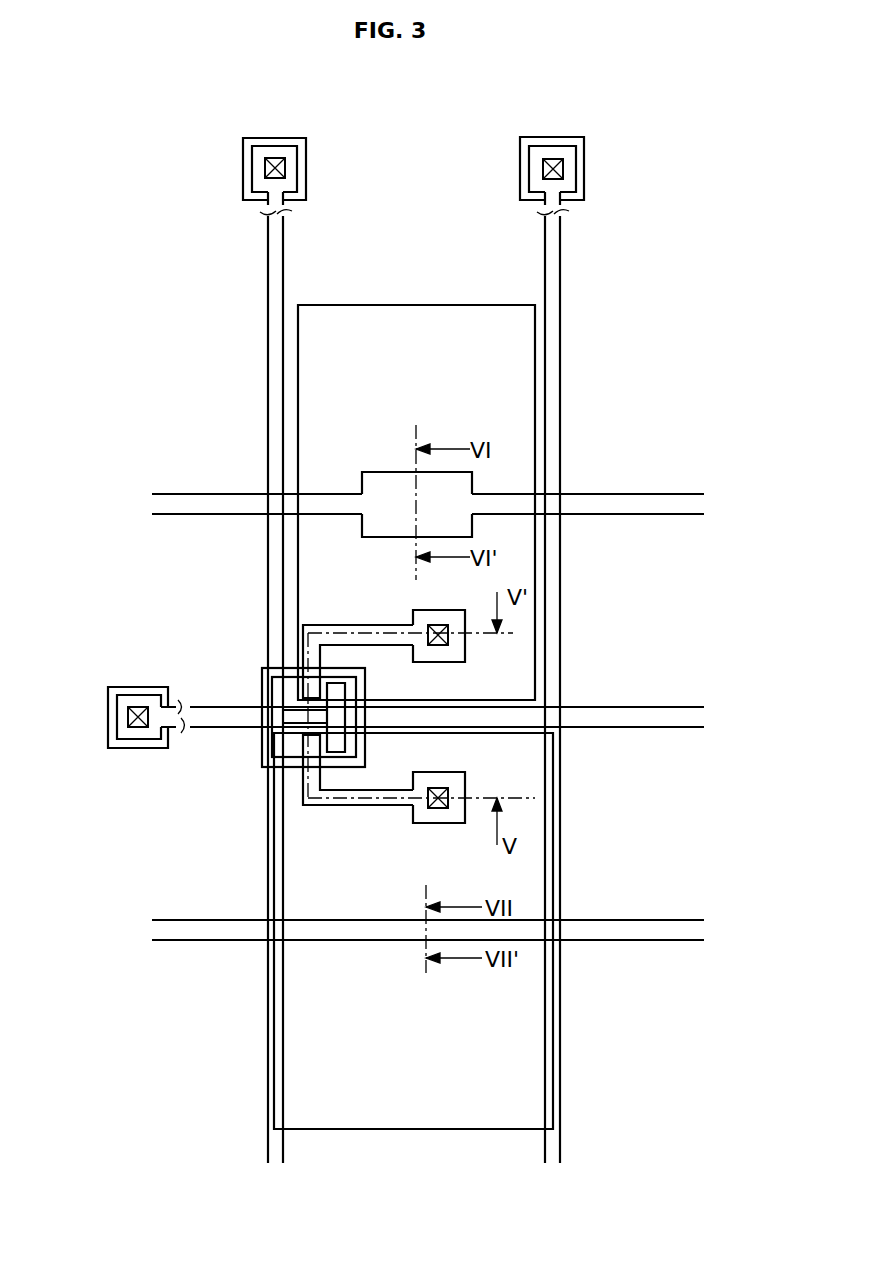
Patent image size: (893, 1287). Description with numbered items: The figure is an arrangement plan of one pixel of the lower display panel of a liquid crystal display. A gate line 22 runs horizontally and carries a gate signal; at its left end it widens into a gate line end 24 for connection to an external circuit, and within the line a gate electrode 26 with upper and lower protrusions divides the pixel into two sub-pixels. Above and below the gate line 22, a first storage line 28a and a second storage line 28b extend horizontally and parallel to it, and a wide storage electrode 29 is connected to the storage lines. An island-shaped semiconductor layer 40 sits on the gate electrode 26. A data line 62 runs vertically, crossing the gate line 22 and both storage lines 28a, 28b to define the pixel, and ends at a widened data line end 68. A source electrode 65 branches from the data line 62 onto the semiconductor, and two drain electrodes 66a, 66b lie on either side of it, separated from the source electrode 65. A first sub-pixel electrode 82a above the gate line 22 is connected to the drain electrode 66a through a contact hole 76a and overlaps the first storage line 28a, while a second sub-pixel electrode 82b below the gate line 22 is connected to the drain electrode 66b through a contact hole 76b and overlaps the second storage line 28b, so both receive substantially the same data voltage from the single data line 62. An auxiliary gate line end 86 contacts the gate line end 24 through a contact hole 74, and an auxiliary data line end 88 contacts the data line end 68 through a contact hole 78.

The gate line 22 is at (680, 707).
The gate line end 24 is at (108, 712).
The gate electrode 26 is at (365, 687).
The first storage line 28a is at (673, 494).
The second storage line 28b is at (673, 920).
The storage electrode 29 is at (396, 472).
The semiconductor layer 40 is at (262, 752).
The data line 62 is at (268, 593).
The source electrode 65 is at (337, 720).
The drain electrode 66a is at (336, 625).
The drain electrode 66b is at (308, 805).
The data line end 68 is at (250, 180).
The contact hole 74 is at (132, 707).
The contact hole 76a is at (436, 624).
The contact hole 76b is at (445, 808).
The contact hole 78 is at (268, 160).
The first sub-pixel electrode 82a is at (545, 395).
The second sub-pixel electrode 82b is at (547, 978).
The auxiliary gate line end 86 is at (120, 750).
The auxiliary data line end 88 is at (307, 180).